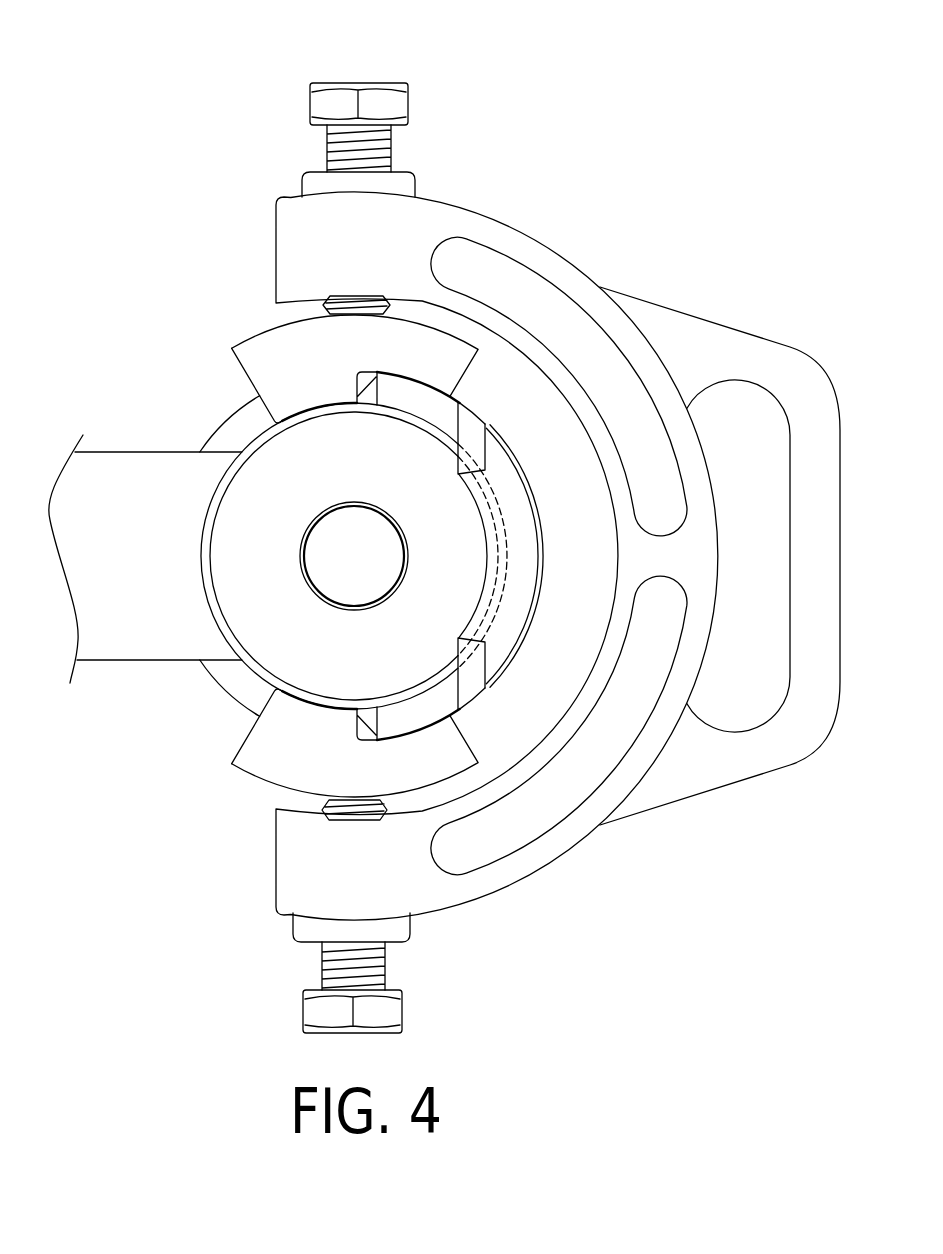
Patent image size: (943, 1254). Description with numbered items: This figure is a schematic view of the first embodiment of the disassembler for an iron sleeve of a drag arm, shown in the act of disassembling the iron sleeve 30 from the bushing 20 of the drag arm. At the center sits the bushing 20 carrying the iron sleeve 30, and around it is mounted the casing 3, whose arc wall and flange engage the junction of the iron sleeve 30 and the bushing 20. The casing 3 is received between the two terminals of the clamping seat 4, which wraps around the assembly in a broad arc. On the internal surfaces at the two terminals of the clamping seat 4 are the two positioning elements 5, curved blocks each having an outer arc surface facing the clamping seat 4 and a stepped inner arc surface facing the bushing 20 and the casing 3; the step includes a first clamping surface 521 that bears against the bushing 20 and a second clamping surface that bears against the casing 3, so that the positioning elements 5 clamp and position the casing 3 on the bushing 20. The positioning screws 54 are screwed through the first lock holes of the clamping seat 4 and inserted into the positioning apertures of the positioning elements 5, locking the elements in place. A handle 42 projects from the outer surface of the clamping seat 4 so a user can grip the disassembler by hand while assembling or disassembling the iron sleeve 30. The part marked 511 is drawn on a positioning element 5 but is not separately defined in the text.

The casing 3 is at (528, 489).
The clamping seat 4 is at (553, 250).
The positioning elements 5 is at (368, 557).
The bushing 20 is at (243, 664).
The iron sleeve 30 is at (271, 464).
The handle 42 is at (786, 345).
The positioning screws 54 is at (375, 92).
The clamp pad 511 is at (458, 708).
The first clamping surface 521 is at (290, 685).